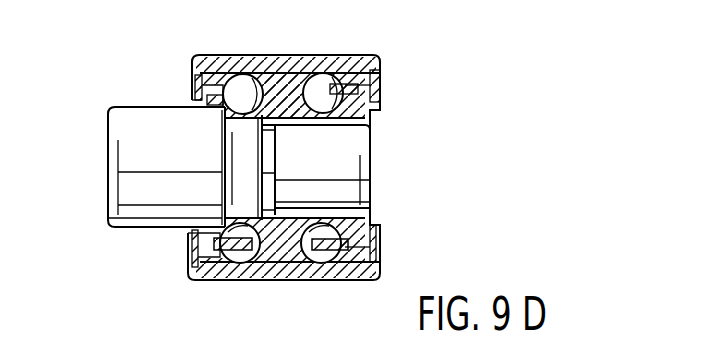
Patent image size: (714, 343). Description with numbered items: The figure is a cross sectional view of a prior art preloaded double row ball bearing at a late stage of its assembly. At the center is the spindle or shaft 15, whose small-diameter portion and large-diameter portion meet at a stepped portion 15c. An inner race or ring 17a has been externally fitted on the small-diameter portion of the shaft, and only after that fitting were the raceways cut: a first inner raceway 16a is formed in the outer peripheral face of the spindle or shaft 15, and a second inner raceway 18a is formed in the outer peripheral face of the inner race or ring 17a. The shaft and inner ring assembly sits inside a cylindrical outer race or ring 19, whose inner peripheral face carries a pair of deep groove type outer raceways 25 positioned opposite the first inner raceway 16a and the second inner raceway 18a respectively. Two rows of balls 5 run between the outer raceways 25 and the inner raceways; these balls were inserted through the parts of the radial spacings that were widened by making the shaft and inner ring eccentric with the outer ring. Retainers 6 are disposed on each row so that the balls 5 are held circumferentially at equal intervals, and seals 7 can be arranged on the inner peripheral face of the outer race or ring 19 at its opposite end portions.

The spindle or shaft 15 is at (132, 122).
The balls 5 is at (233, 82).
The retainers 6 is at (200, 95).
The seals 7 is at (382, 92).
The first inner raceway 16a is at (260, 78).
The stepped portion 15c is at (285, 74).
The outer race or ring 19 is at (327, 67).
The second inner raceway 18a is at (368, 56).
The outer raceways 25 is at (222, 264).
The inner race or ring 17a is at (282, 262).